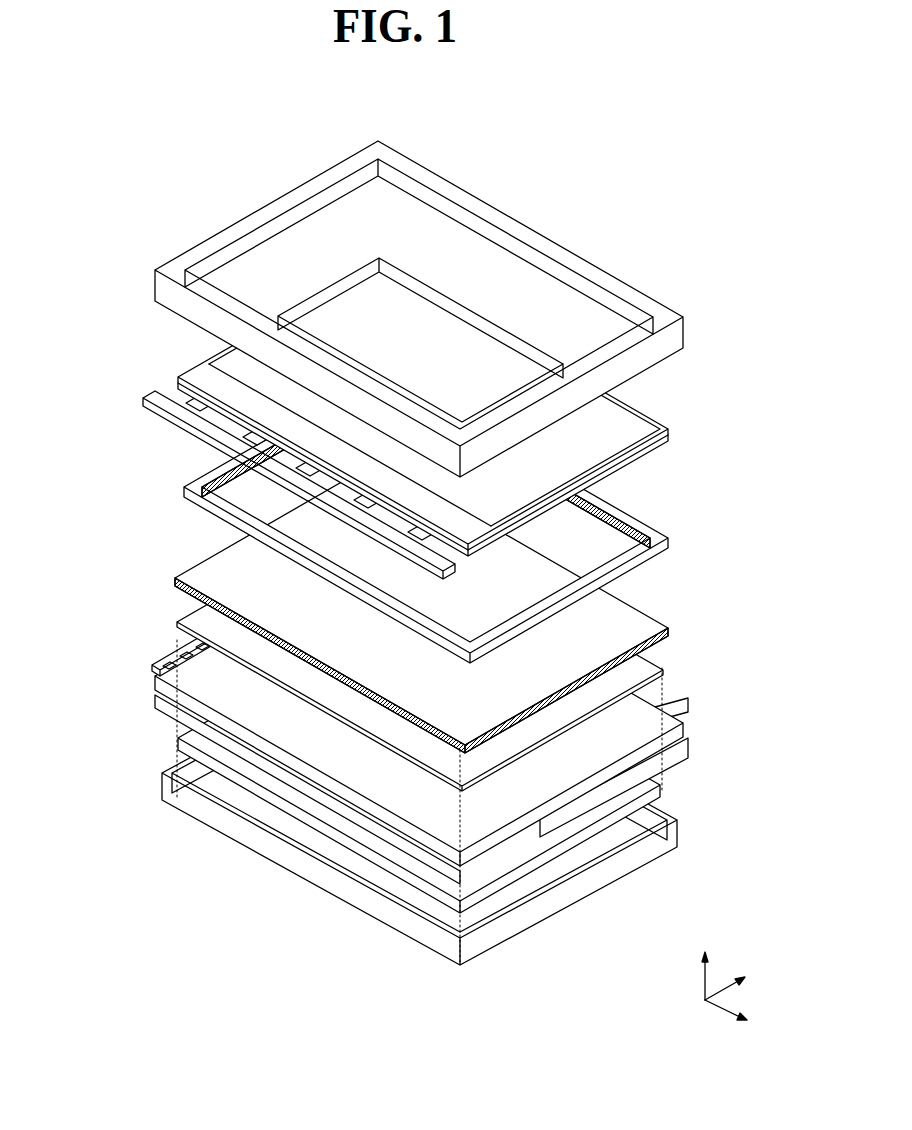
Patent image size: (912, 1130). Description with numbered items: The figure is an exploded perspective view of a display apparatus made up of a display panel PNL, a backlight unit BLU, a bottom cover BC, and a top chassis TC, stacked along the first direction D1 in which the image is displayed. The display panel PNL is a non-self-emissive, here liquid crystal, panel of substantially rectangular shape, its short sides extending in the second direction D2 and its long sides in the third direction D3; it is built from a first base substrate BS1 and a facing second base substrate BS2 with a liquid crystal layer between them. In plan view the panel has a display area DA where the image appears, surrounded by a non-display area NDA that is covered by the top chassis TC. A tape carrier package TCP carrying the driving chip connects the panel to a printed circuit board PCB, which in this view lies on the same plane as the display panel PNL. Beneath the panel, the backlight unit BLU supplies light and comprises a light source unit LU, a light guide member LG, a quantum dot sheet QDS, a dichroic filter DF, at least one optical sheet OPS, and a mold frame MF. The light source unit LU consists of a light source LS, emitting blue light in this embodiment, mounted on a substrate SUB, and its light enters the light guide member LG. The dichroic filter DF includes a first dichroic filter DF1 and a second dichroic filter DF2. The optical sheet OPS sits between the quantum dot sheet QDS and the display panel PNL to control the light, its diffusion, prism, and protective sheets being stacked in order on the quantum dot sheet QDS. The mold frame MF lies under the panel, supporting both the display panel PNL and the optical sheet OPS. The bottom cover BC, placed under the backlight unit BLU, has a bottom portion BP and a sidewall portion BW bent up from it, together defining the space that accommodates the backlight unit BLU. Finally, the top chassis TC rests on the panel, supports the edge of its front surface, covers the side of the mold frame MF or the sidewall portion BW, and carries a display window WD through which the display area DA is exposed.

The display window WD is at (487, 268).
The top chassis TC is at (690, 334).
The display panel PNL is at (744, 458).
The first base substrate BS1 is at (670, 439).
The second base substrate BS2 is at (670, 430).
The display area DA is at (242, 362).
The non-display area NDA is at (196, 370).
The printed circuit board PCB is at (147, 401).
The tape carrier package TCP is at (212, 445).
The backlight unit BLU is at (48, 512).
The mold frame MF is at (183, 489).
The optical sheet OPS is at (176, 576).
The quantum dot sheet QDS is at (197, 617).
The light source unit LU is at (88, 690).
The light source LS is at (165, 663).
The substrate SUB is at (155, 675).
The light guide member LG is at (155, 697).
The dichroic filter DF is at (88, 772).
The first dichroic filter DF1 is at (160, 712).
The second dichroic filter DF2 is at (180, 745).
The bottom cover BC is at (742, 792).
The bottom portion BP is at (650, 812).
The sidewall portion BW is at (680, 835).
The first direction D1 is at (704, 964).
The second direction D2 is at (738, 981).
The third direction D3 is at (738, 1017).